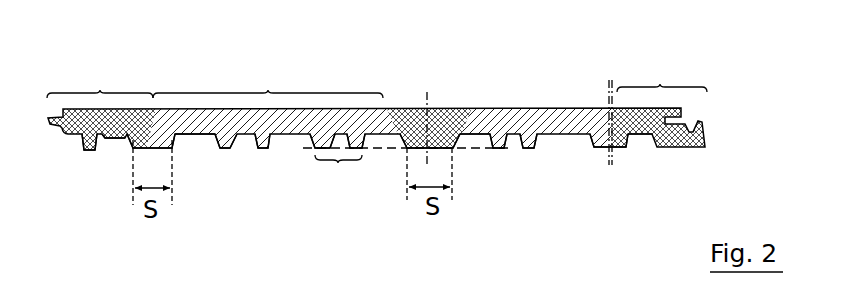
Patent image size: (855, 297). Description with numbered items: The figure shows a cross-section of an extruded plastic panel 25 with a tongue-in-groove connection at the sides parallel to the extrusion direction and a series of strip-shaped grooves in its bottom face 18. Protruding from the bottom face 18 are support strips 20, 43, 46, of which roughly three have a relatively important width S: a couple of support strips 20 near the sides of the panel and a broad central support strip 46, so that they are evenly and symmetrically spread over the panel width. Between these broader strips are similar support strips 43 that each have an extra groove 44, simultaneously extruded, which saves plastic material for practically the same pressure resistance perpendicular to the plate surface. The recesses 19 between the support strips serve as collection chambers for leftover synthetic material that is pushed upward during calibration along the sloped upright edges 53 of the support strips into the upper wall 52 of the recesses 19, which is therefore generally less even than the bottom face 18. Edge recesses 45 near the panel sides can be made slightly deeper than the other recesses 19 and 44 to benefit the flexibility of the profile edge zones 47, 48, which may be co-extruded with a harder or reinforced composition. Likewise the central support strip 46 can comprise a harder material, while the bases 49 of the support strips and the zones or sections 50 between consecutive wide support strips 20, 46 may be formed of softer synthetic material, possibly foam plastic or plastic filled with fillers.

The bottom face 18 is at (407, 200).
The recesses 19 is at (315, 193).
The support strips 20 is at (140, 140).
The panel 25 is at (380, 90).
The support strips 43 is at (337, 164).
The extra groove 44 is at (408, 174).
The edge recesses 45 is at (373, 174).
The central support strip 46 is at (446, 117).
The profile edge zone 47 is at (100, 75).
The profile edge zone 48 is at (662, 71).
The bases 49 is at (258, 193).
The zones or sections 50 is at (268, 75).
The upper wall 52 is at (465, 207).
The sloped upright edges 53 is at (92, 187).